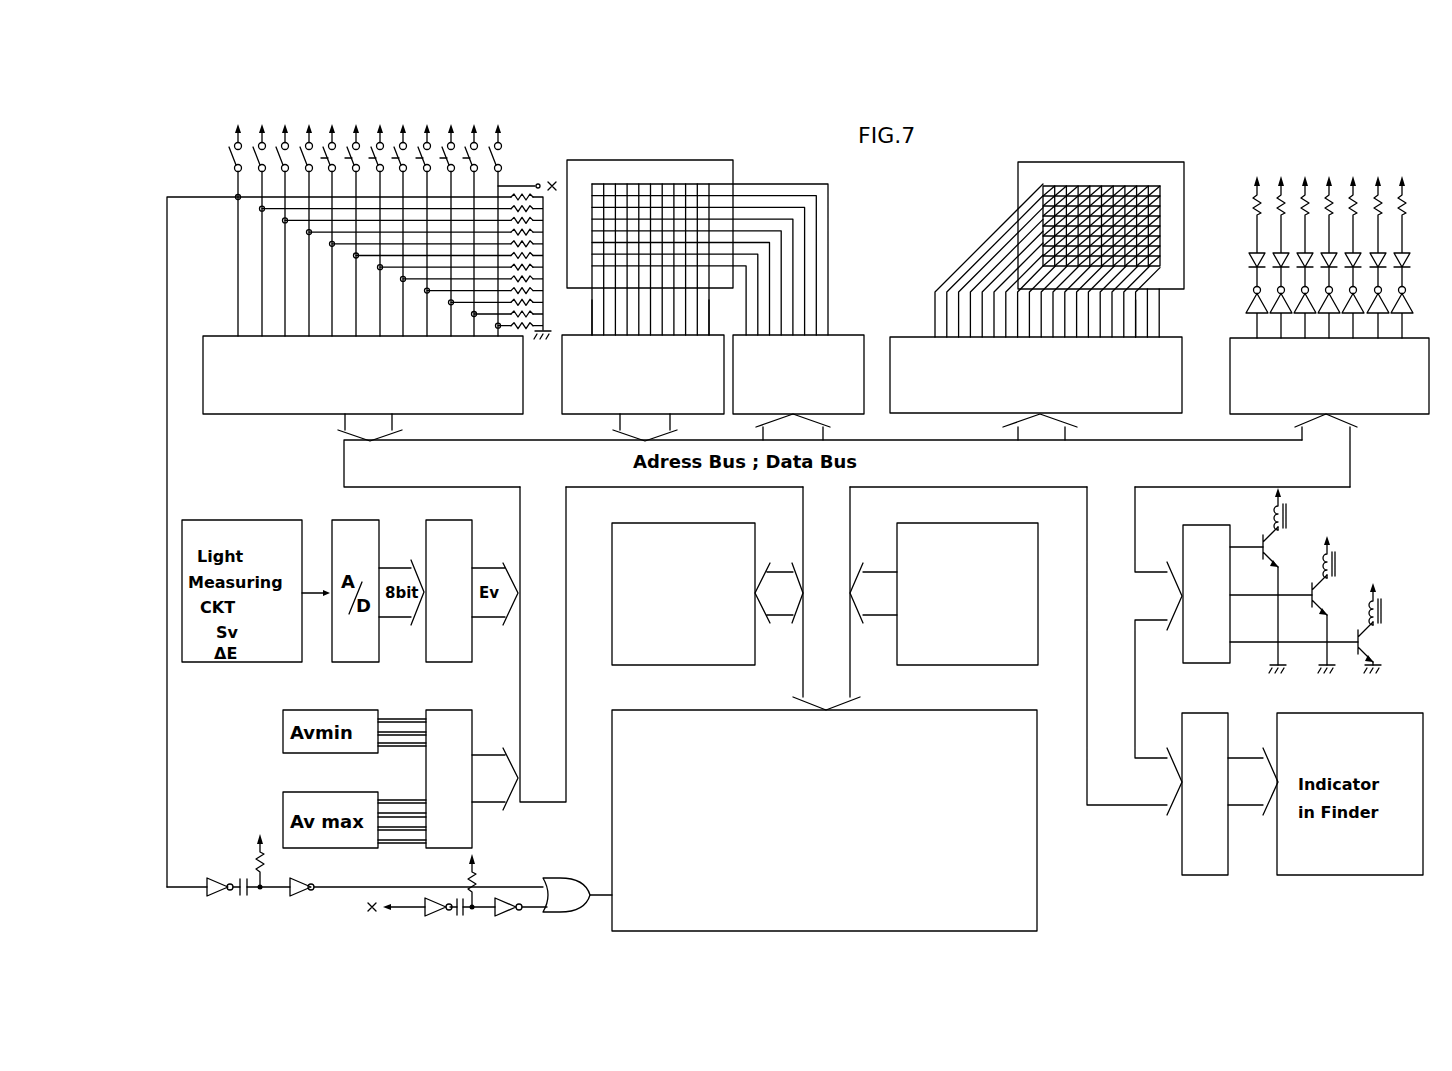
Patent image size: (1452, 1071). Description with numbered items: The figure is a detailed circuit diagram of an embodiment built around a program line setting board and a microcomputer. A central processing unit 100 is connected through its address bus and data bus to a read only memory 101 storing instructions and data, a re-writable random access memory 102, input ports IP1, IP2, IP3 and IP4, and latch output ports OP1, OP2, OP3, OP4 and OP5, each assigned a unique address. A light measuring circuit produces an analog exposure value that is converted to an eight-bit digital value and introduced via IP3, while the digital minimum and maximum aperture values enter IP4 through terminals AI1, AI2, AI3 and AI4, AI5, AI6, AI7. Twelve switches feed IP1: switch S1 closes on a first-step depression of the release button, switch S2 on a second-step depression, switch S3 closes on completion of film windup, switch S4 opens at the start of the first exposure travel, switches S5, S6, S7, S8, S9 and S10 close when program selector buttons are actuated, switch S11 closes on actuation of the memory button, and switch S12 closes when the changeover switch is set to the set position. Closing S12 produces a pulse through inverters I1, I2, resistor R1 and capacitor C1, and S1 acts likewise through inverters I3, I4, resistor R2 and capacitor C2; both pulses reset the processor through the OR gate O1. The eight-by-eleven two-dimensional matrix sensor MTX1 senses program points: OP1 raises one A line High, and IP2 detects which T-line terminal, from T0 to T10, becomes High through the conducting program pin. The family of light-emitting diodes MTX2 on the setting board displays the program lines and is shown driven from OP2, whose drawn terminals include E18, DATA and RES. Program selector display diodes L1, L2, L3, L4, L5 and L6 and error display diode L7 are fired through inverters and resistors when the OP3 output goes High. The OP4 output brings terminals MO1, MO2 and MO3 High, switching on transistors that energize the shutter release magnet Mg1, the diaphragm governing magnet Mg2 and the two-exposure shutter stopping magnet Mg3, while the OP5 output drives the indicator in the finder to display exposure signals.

The switch S1 is at (237, 190).
The switch S2 is at (261, 190).
The switch S3 is at (284, 190).
The switch S4 is at (308, 190).
The switch S5 is at (331, 190).
The switch S6 is at (355, 190).
The switch S7 is at (379, 190).
The switch S8 is at (402, 190).
The switch S9 is at (426, 190).
The switch S10 is at (450, 190).
The switch S11 is at (473, 190).
The switch S12 is at (499, 190).
The input port IP1 is at (363, 375).
The input port IP2 is at (643, 374).
The input port IP3 is at (449, 591).
The input port IP4 is at (449, 779).
The latch output port OP1 is at (794, 391).
The latch output port OP2 is at (1039, 391).
The latch output port OP3 is at (1326, 391).
The latch output port OP4 is at (1199, 587).
The latch output port OP5 is at (1198, 774).
The two-dimensional matrix sensor MTX1 is at (655, 160).
The family of LEDs MTX2 is at (1098, 162).
The T-line terminal T0 is at (592, 314).
The T-line terminal T10 is at (712, 305).
The data line DATA is at (1156, 300).
The reset line RES is at (1166, 320).
The output line E18 is at (1166, 350).
The program selector display LED L1 is at (1256, 250).
The program selector display LED L2 is at (1280, 250).
The program selector display LED L3 is at (1304, 250).
The program selector display LED L4 is at (1328, 250).
The program selector display LED L5 is at (1352, 250).
The program selector display LED L6 is at (1377, 250).
The error display LED L7 is at (1401, 250).
The CPU 100 is at (1037, 862).
The read only memory ROM 101 is at (970, 665).
The random access memory RAM 102 is at (682, 665).
The terminal AI1 is at (390, 719).
The terminal AI2 is at (398, 732).
The terminal AI3 is at (410, 746).
The terminal AI4 is at (416, 800).
The terminal AI5 is at (398, 813).
The terminal AI6 is at (408, 830).
The terminal AI7 is at (392, 843).
The inverter I1 is at (428, 916).
The inverter I2 is at (508, 917).
The inverter I3 is at (207, 893).
The inverter I4 is at (303, 896).
The capacitor C1 is at (459, 916).
The capacitor C2 is at (243, 896).
The resistor R1 is at (478, 872).
The resistor R2 is at (252, 856).
The OR gate O1 is at (567, 888).
The terminal MO1 is at (1230, 498).
The terminal MO2 is at (1259, 572).
The terminal MO3 is at (1259, 620).
The magnet Mg1 is at (1286, 520).
The magnet Mg2 is at (1335, 568).
The magnet Mg3 is at (1381, 614).